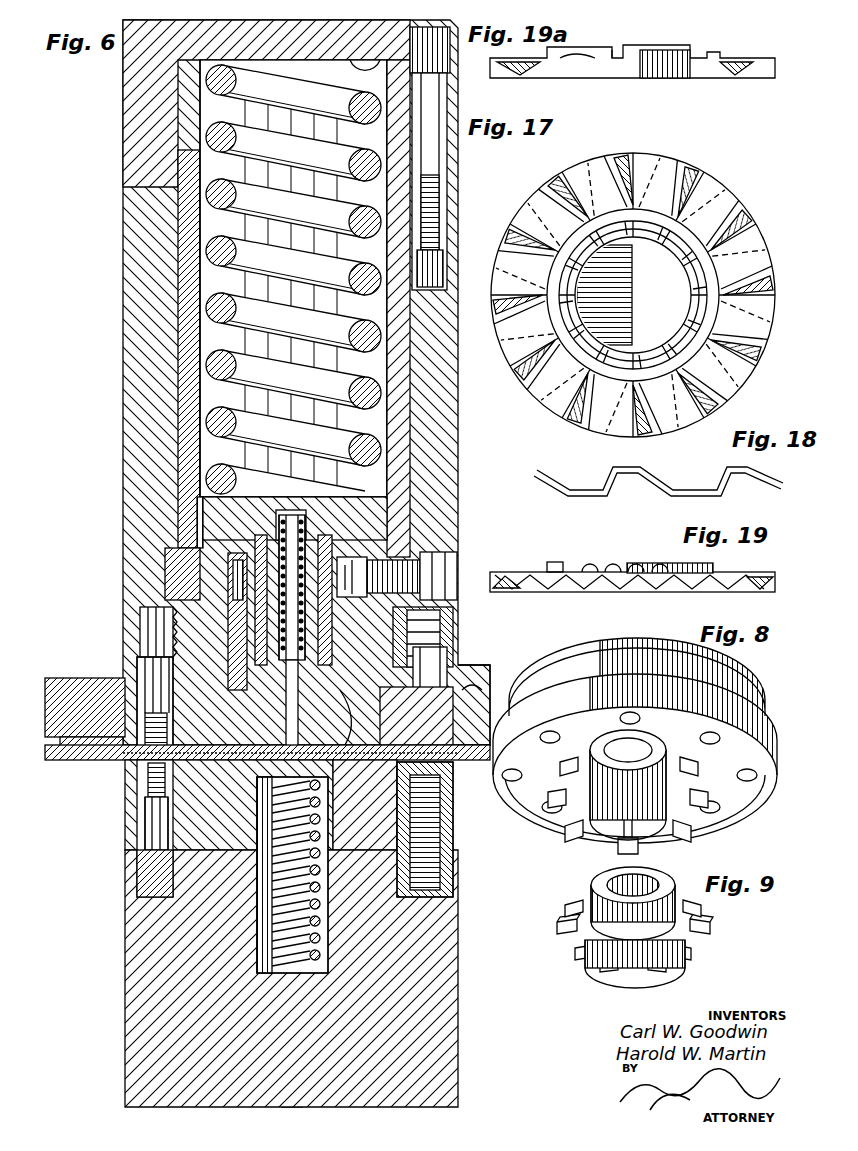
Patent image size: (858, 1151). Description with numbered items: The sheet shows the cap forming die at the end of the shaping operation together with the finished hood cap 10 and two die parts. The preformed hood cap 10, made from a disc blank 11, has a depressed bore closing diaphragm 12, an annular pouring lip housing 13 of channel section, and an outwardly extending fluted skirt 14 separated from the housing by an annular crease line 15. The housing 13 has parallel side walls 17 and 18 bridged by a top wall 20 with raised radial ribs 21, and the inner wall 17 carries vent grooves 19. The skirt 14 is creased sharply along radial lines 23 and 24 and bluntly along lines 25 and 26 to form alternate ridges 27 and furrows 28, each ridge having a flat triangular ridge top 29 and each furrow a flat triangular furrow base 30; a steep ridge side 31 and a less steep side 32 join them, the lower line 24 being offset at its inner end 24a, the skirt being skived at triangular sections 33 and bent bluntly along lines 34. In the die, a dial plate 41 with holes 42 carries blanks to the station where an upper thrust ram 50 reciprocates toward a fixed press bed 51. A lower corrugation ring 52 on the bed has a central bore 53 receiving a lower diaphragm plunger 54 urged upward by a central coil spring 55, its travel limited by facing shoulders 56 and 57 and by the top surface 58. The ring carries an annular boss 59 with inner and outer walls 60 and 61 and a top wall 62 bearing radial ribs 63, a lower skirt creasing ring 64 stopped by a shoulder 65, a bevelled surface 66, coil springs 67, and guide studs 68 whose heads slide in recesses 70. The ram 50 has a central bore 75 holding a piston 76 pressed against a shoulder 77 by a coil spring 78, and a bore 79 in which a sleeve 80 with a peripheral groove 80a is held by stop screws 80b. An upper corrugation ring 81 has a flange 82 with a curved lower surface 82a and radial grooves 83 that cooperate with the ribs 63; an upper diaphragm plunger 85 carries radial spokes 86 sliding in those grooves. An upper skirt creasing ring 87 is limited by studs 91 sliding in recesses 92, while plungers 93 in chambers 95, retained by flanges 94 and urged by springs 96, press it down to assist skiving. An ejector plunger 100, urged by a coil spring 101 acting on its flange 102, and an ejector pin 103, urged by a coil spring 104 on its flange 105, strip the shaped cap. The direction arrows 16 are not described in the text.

In FIG. 6, the hood cap 10 is at (455, 790).
In FIG. 19A, the hood cap 10 is at (782, 68).
In FIG. 17, the hood cap 10 is at (770, 272).
In FIG. 18, the hood cap 10 is at (770, 478).
In FIG. 19, the hood cap 10 is at (780, 592).
In FIG. 6, the disc blank 11 is at (455, 775).
In FIG. 6, the bore closing diaphragm 12 is at (148, 810).
In FIG. 17, the bore closing diaphragm 12 is at (760, 258).
In FIG. 19A, the pouring lip housing 13 is at (660, 50).
In FIG. 17, the pouring lip housing 13 is at (633, 295).
In FIG. 19, the pouring lip housing 13 is at (715, 565).
In FIG. 6, the fluted skirt 14 is at (458, 560).
In FIG. 19A, the fluted skirt 14 is at (490, 55).
In FIG. 17, the fluted skirt 14 is at (760, 340).
In FIG. 18, the fluted skirt 14 is at (535, 472).
In FIG. 19, the fluted skirt 14 is at (484, 572).
In FIG. 6, the annular crease line 15 is at (150, 770).
In FIG. 17, the annular crease line 15 is at (500, 320).
In FIG. 19, the annular crease line 15 is at (560, 548).
In FIG. 6, the direction arrow 16 is at (220, 775).
In FIG. 19A, the inner side housing wall 17 is at (525, 72).
In FIG. 17, the inner side housing wall 17 is at (597, 275).
In FIG. 19A, the side wall 18 is at (572, 50).
In FIG. 17, the side wall 18 is at (720, 200).
In FIG. 19, the side wall 18 is at (612, 564).
In FIG. 19A, the vent grooves 19 is at (575, 70).
In FIG. 17, the top wall 20 is at (540, 395).
In FIG. 19, the top wall 20 is at (660, 564).
In FIG. 19A, the radial ribs 21 is at (617, 50).
In FIG. 17, the radial ribs 21 is at (655, 350).
In FIG. 19, the radial ribs 21 is at (610, 552).
In FIG. 17, the radial crease lines 23 is at (620, 432).
In FIG. 18, the radial crease lines 23 is at (778, 489).
In FIG. 19, the radial crease lines 23 is at (625, 592).
In FIG. 17, the radial crease lines 24 is at (658, 426).
In FIG. 18, the radial crease lines 24 is at (740, 490).
In FIG. 19, the radial crease lines 24 is at (655, 592).
In FIG. 17, the radially inner end of crease line 24a is at (520, 382).
In FIG. 19, the radially inner end of crease line 24a is at (585, 592).
In FIG. 17, the blunt crease lines 25 is at (620, 425).
In FIG. 18, the blunt crease lines 25 is at (632, 480).
In FIG. 17, the blunt crease lines 26 is at (622, 430).
In FIG. 18, the blunt crease lines 26 is at (580, 496).
In FIG. 17, the ridges 27 is at (745, 230).
In FIG. 18, the ridges 27 is at (640, 470).
In FIG. 19, the ridges 27 is at (510, 572).
In FIG. 19A, the furrows 28 is at (745, 78).
In FIG. 17, the furrows 28 is at (735, 215).
In FIG. 18, the furrows 28 is at (545, 480).
In FIG. 19, the furrows 28 is at (755, 592).
In FIG. 19A, the triangular ridge top 29 is at (735, 60).
In FIG. 17, the triangular ridge top 29 is at (600, 425).
In FIG. 18, the triangular ridge top 29 is at (745, 468).
In FIG. 19, the triangular ridge top 29 is at (745, 575).
In FIG. 17, the triangular furrow base 30 is at (530, 220).
In FIG. 18, the triangular furrow base 30 is at (712, 496).
In FIG. 19, the triangular furrow base 30 is at (700, 592).
In FIG. 17, the ridge side 31 is at (656, 428).
In FIG. 18, the ridge side 31 is at (616, 496).
In FIG. 19, the ridge side 31 is at (545, 592).
In FIG. 17, the ridge side 32 is at (525, 235).
In FIG. 18, the ridge side 32 is at (672, 480).
In FIG. 17, the skived triangular sections 33 is at (629, 308).
In FIG. 17, the blunt bend lines 34 is at (755, 365).
In FIG. 6, the dial plate 41 is at (50, 678).
In FIG. 6, the holes 42 is at (480, 680).
In FIG. 6, the upper thrust ram 50 is at (124, 452).
In FIG. 6, the press bed 51 is at (448, 970).
In FIG. 6, the lower corrugation ring 52 is at (150, 840).
In FIG. 6, the central bore 53 is at (400, 905).
In FIG. 6, the lower diaphragm plunger 54 is at (200, 900).
In FIG. 6, the central coil spring 55 is at (256, 905).
In FIG. 6, the annular shoulder 56 is at (140, 897).
In FIG. 6, the annular shoulder 57 is at (140, 855).
In FIG. 6, the top surface of press bed 58 is at (370, 905).
In FIG. 6, the annular boss 59 is at (453, 858).
In FIG. 6, the inner side wall 60 is at (452, 870).
In FIG. 6, the outer side wall 61 is at (453, 846).
In FIG. 6, the top wall 62 is at (453, 820).
In FIG. 6, the radial ribs 63 is at (156, 692).
In FIG. 6, the lower skirt creasing ring 64 is at (130, 790).
In FIG. 6, the annular shoulder 65 is at (453, 833).
In FIG. 6, the bevelled surface 66 is at (453, 808).
In FIG. 6, the coil springs 67 is at (450, 895).
In FIG. 6, the studs 68 is at (137, 822).
In FIG. 6, the recesses 70 is at (140, 875).
In FIG. 6, the central bore 75 is at (180, 330).
In FIG. 6, the piston 76 is at (197, 507).
In FIG. 6, the shoulder 77 is at (197, 538).
In FIG. 6, the coil spring 78 is at (200, 417).
In FIG. 6, the central bore 79 is at (165, 565).
In FIG. 6, the sleeve 80 is at (220, 578).
In FIG. 6, the peripheral groove 80a is at (233, 560).
In FIG. 6, the stop screws 80b is at (447, 557).
In FIG. 6, the upper corrugation ring 81 is at (228, 606).
In FIG. 8, the upper corrugation ring 81 is at (755, 690).
In FIG. 6, the flange 82 is at (425, 690).
In FIG. 8, the flange 82 is at (680, 830).
In FIG. 8, the curved lower surface 82a is at (650, 840).
In FIG. 8, the radial grooves 83 is at (690, 812).
In FIG. 6, the upper diaphragm plunger 85 is at (360, 705).
In FIG. 9, the upper diaphragm plunger 85 is at (690, 955).
In FIG. 6, the radial spokes 86 is at (140, 668).
In FIG. 9, the radial spokes 86 is at (712, 925).
In FIG. 6, the upper skirt creasing ring 87 is at (475, 670).
In FIG. 6, the studs 91 is at (150, 642).
In FIG. 6, the recesses 92 is at (214, 592).
In FIG. 6, the plungers 93 is at (478, 640).
In FIG. 6, the flanges 94 is at (440, 625).
In FIG. 6, the chambers 95 is at (448, 605).
In FIG. 6, the springs 96 is at (445, 612).
In FIG. 6, the ejector plunger 100 is at (150, 655).
In FIG. 6, the coil spring 101 is at (395, 520).
In FIG. 6, the flange 102 is at (150, 625).
In FIG. 6, the ejector pin 103 is at (375, 735).
In FIG. 6, the coil spring 104 is at (285, 520).
In FIG. 6, the flange 105 is at (291, 811).